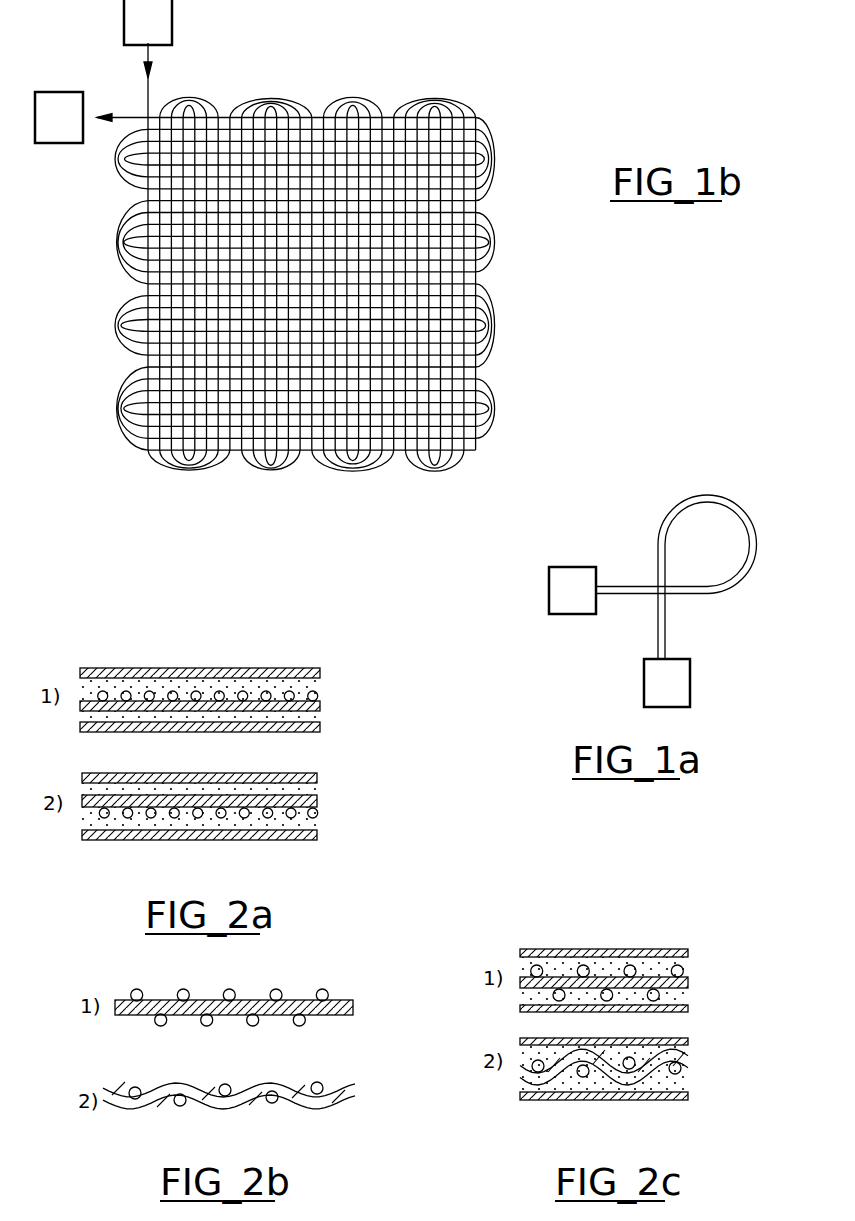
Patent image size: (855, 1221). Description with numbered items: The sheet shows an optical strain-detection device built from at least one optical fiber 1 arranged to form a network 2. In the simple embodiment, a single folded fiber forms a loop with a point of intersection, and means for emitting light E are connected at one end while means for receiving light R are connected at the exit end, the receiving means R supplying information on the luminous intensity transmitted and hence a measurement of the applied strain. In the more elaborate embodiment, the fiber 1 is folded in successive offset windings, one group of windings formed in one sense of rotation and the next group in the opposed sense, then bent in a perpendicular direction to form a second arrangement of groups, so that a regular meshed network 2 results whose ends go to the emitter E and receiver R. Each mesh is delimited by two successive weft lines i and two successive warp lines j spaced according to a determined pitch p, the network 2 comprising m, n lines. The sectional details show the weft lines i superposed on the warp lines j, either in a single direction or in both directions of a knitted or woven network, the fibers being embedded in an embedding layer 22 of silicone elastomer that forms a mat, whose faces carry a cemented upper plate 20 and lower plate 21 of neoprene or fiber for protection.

In FIG. 1B, the optical fiber 1 is at (303, 96).
In FIG. 1A, the optical fiber 1 is at (712, 492).
In FIG. 1B, the network 2 is at (472, 450).
In FIG. 1A, the network 2 is at (681, 592).
In FIG. 2A, the upper plate 20 is at (110, 668).
In FIG. 2C, the upper plate 20 is at (570, 950).
In FIG. 2A, the lower plate 21 is at (105, 734).
In FIG. 2C, the lower plate 21 is at (555, 1013).
In FIG. 2A, the embedding layer 22 is at (185, 692).
In FIG. 2C, the embedding layer 22 is at (645, 963).
In FIG. 1B, the means for emitting light E is at (124, 28).
In FIG. 1A, the means for emitting light E is at (578, 577).
In FIG. 1B, the means for receiving light R is at (52, 143).
In FIG. 1A, the means for receiving light R is at (690, 688).
In FIG. 1B, the weft line i is at (500, 305).
In FIG. 2A, the weft line i is at (322, 705).
In FIG. 2B, the weft line i is at (232, 992).
In FIG. 1B, the warp line j is at (380, 462).
In FIG. 2A, the warp line j is at (266, 695).
In FIG. 2B, the warp line j is at (353, 1008).
In FIG. 1B, the number of lines m is at (473, 462).
In FIG. 1B, the number of lines n is at (480, 448).
In FIG. 1B, the pitch p is at (209, 473).